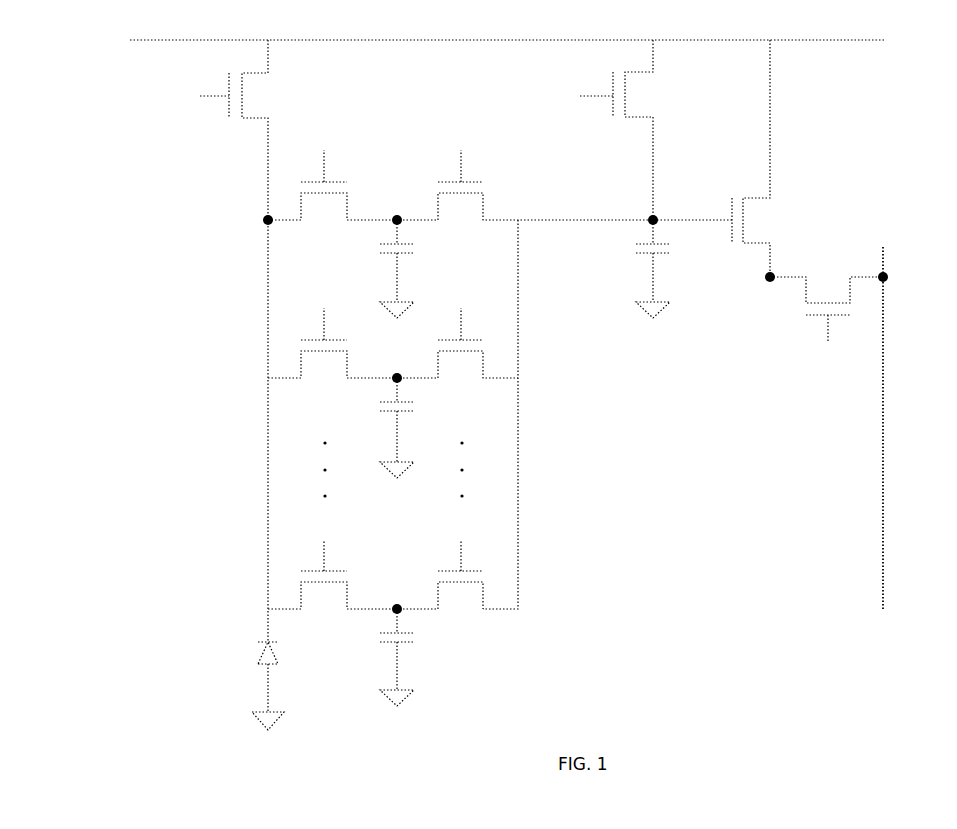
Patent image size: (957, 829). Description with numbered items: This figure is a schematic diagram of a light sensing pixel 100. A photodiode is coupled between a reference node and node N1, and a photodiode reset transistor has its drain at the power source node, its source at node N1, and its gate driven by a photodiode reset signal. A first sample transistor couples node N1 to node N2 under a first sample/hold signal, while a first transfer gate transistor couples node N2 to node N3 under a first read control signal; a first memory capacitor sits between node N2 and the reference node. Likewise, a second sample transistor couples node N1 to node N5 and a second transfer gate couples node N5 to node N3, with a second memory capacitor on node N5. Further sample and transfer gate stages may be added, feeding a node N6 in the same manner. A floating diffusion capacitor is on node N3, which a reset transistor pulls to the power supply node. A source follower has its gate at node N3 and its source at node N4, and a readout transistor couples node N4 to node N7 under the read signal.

The light sensing pixel 100 is at (92, 241).
The node N1 is at (251, 220).
The node N2 is at (397, 207).
The node N3 is at (638, 207).
The node N4 is at (757, 289).
The node N5 is at (397, 365).
The node N6 is at (397, 596).
The node N7 is at (901, 286).